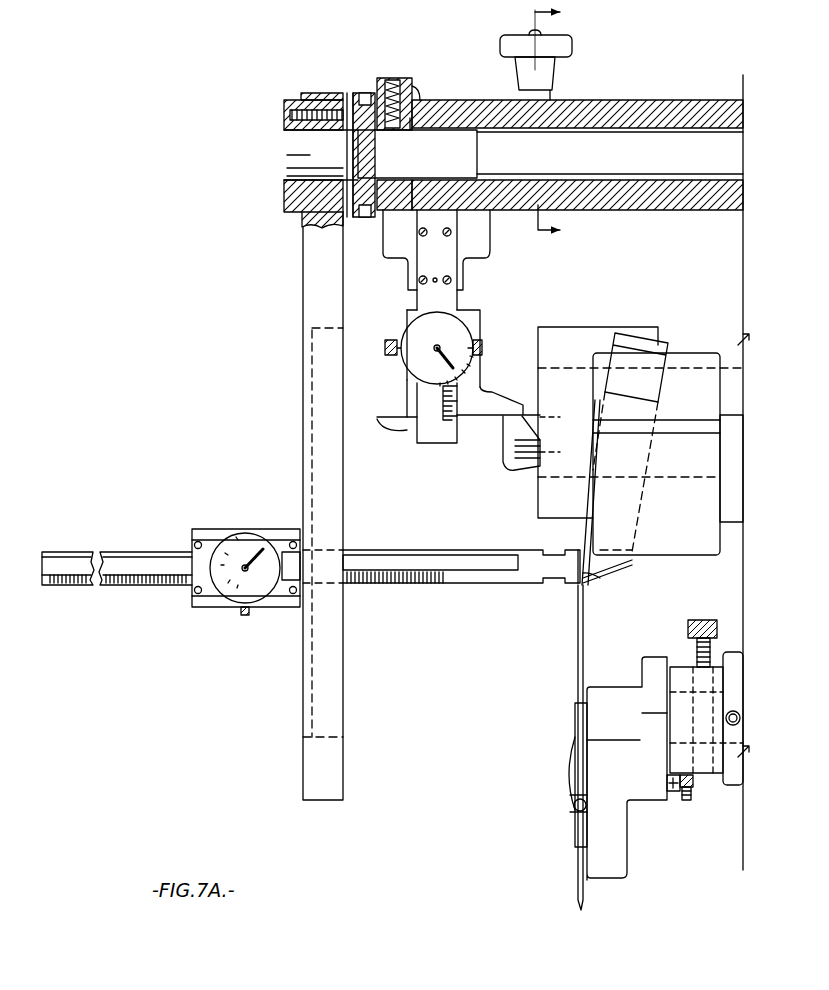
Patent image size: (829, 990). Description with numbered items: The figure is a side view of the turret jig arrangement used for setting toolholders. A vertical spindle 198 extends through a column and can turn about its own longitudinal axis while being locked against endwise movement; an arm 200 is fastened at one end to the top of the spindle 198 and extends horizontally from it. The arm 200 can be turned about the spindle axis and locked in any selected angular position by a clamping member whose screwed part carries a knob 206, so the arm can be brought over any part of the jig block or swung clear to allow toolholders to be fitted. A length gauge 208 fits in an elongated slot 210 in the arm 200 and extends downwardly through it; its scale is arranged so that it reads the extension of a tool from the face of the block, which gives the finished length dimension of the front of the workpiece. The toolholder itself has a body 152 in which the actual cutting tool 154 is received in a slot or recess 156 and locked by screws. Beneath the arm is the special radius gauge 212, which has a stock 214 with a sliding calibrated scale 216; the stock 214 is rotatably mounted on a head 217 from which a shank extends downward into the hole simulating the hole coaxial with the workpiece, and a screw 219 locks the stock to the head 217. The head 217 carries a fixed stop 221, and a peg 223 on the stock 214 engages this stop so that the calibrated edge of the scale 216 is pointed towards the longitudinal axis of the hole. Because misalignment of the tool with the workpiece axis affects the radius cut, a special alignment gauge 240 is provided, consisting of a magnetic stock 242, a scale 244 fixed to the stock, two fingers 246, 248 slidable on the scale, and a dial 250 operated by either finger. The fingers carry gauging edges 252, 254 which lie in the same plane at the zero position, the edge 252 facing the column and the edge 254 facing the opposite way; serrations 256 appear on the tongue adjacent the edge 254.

The body 152 is at (687, 353).
The cutting tool 154 is at (588, 578).
The slot or recess 156 is at (653, 463).
The spindle 198 is at (592, 167).
The arm 200 is at (303, 259).
The knob 206 is at (553, 82).
The length gauge 208 is at (283, 530).
The elongated slot 210 is at (305, 737).
The radius gauge 212 is at (613, 686).
The stock 214 is at (640, 779).
The sliding calibrated scale 216 is at (585, 630).
The head 217 is at (683, 668).
The screw 219 is at (703, 622).
The fixed stop 221 is at (693, 790).
The peg 223 is at (672, 792).
The alignment gauge 240 is at (467, 318).
The magnetic stock 242 is at (485, 258).
The scale 244 is at (423, 392).
The finger 246 is at (400, 432).
The finger 248 is at (487, 394).
The dial 250 is at (462, 336).
The gauging edge 252 is at (398, 417).
The gauging edge 254 is at (495, 418).
The serrations 256 is at (523, 457).